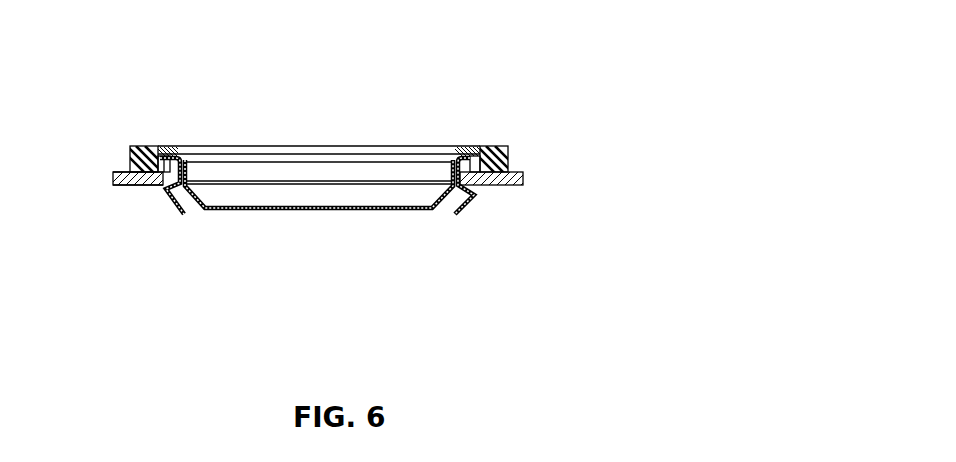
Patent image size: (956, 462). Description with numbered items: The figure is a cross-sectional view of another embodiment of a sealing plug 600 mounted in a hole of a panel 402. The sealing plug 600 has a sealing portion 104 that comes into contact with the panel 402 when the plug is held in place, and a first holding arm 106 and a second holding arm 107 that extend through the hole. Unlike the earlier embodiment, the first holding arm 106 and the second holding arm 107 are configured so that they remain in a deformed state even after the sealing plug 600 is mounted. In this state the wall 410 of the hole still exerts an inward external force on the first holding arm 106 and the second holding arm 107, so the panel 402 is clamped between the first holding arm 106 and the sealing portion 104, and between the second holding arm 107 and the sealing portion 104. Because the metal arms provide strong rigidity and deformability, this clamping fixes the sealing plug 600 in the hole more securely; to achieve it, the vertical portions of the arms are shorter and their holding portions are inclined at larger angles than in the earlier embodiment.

The sealing plug 600 is at (462, 102).
The sealing portion 104 is at (503, 147).
The panel 402 is at (515, 182).
The wall of the hole 410 is at (155, 186).
The first holding arm 106 is at (184, 214).
The second holding arm 107 is at (455, 213).